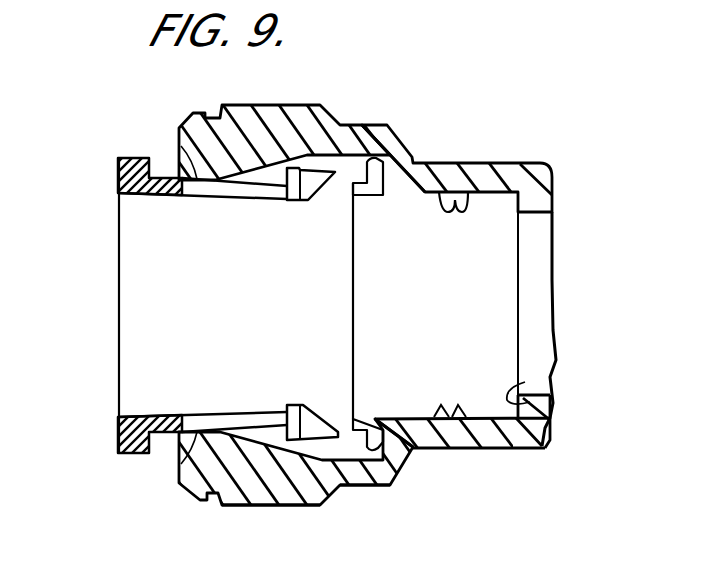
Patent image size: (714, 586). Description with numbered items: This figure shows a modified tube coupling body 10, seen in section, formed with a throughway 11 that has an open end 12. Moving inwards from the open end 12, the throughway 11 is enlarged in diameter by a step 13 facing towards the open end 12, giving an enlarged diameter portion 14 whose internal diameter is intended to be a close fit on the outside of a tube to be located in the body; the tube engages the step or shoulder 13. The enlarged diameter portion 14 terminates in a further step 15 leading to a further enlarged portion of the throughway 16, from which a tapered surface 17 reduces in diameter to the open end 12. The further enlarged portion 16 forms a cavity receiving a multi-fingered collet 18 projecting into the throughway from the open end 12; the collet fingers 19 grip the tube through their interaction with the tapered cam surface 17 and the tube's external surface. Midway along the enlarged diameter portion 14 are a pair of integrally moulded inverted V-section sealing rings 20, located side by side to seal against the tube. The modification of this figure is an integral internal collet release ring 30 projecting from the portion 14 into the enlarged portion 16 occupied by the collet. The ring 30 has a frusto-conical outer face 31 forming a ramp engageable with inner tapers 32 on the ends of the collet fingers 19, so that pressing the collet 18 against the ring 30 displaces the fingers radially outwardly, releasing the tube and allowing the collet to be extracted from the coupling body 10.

The tube coupling body 10 is at (383, 90).
The throughway 11 is at (535, 243).
The open end 12 is at (180, 152).
The step 13 is at (525, 382).
The enlarged diameter portion 14 is at (488, 175).
The further step 15 is at (407, 472).
The further enlarged portion of the throughway 16 is at (357, 498).
The tapered surface 17 is at (250, 506).
The multi-fingered collet 18 is at (118, 177).
The collet fingers 19 is at (277, 200).
The inverted V-section sealing rings 20 is at (462, 211).
The collet release ring 30 is at (377, 197).
The frusto-conical outer face 31 is at (390, 128).
The inner tapers 32 is at (323, 205).